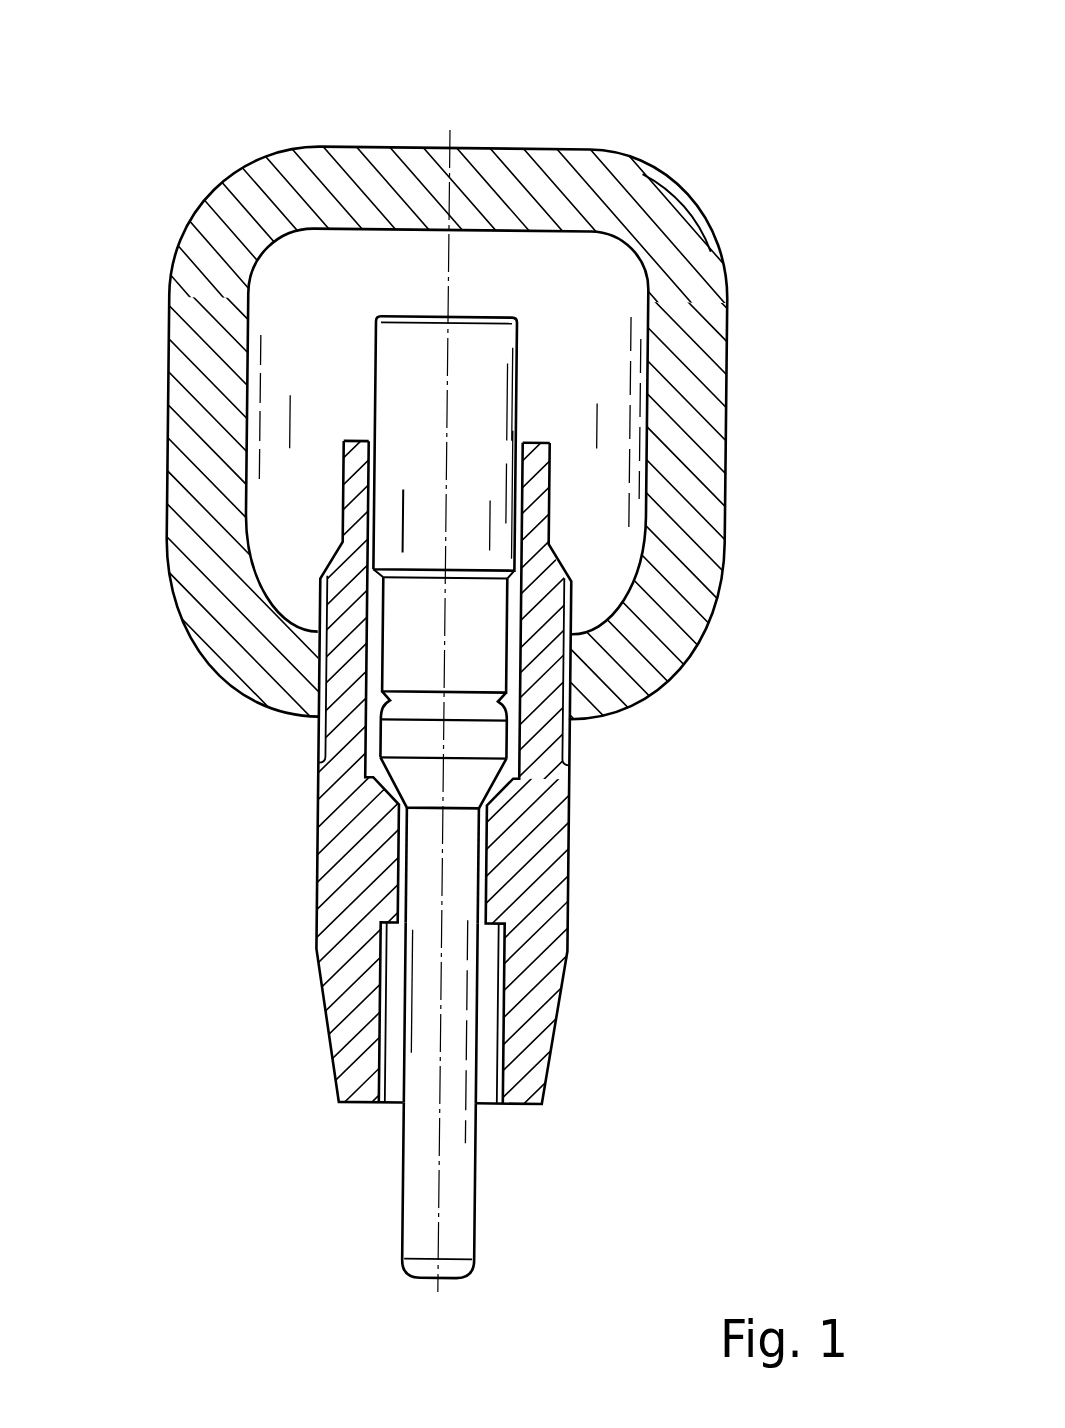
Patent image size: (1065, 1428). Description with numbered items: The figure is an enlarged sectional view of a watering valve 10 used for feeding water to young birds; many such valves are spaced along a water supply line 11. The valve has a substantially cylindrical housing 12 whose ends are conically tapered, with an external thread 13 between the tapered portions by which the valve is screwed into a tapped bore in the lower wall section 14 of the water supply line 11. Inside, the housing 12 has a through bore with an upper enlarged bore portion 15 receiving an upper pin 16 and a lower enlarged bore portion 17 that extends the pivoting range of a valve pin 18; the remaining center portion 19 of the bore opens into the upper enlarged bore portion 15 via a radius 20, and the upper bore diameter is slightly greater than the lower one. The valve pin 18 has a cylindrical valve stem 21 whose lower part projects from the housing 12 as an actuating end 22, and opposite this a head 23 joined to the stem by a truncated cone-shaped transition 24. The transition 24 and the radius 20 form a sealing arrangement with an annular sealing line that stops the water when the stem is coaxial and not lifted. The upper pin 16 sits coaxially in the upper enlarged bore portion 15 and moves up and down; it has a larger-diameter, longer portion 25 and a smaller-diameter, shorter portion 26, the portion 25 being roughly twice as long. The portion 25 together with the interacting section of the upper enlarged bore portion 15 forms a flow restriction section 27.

The watering valve 10 is at (688, 105).
The water supply line 11 is at (707, 300).
The housing 12 is at (557, 883).
The external thread 13 is at (572, 752).
The lower wall section 14 is at (592, 695).
The upper enlarged bore portion 15 is at (513, 597).
The upper pin 16 is at (349, 380).
The lower enlarged bore portion 17 is at (495, 1015).
The valve pin 18 is at (425, 880).
The center portion 19 is at (423, 855).
The radius 20 is at (402, 800).
The valve stem 21 is at (427, 983).
The actuating end 22 is at (423, 1208).
The head 23 is at (400, 738).
The truncated cone-shaped transition 24 is at (413, 778).
The portion with the greater surface area 25 is at (395, 340).
The portion with the smaller surface area 26 is at (413, 617).
The flow restriction section 27 is at (524, 479).